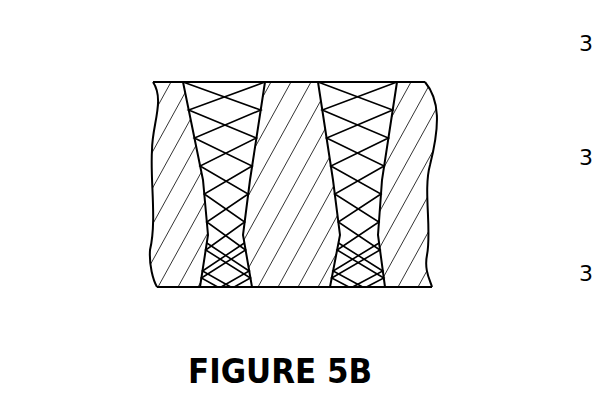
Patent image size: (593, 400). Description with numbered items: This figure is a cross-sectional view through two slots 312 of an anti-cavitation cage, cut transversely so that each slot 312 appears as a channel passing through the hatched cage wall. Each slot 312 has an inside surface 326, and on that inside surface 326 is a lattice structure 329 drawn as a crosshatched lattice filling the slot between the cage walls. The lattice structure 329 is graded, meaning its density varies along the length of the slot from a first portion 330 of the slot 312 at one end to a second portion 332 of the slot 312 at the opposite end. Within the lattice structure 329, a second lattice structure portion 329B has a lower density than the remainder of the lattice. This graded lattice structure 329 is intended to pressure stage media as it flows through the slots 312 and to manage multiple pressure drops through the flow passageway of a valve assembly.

The slot 312 is at (187, 136).
The inside surface 326 is at (204, 199).
The lattice structure 329 is at (286, 150).
The second lattice structure portion 329B is at (388, 259).
The first portion of slot 330 is at (198, 268).
The second portion of slot 332 is at (165, 80).